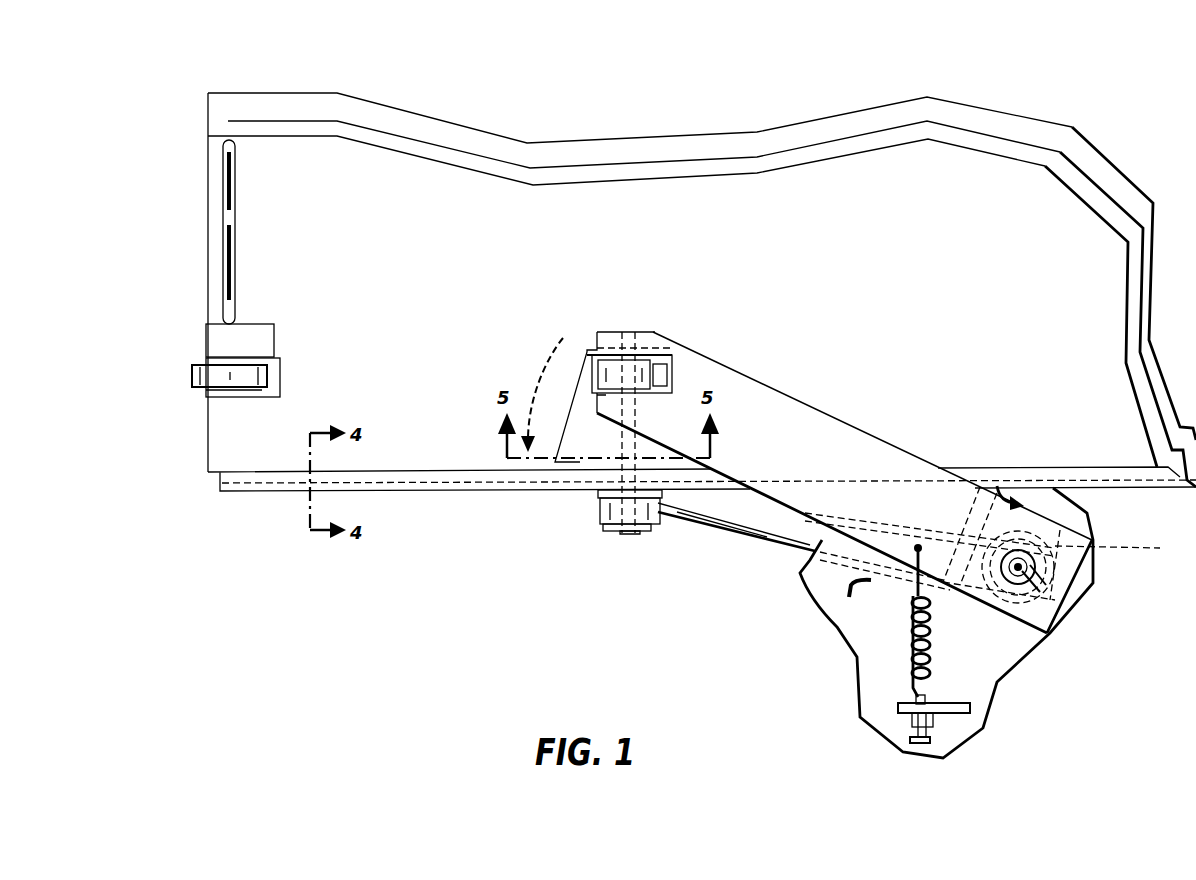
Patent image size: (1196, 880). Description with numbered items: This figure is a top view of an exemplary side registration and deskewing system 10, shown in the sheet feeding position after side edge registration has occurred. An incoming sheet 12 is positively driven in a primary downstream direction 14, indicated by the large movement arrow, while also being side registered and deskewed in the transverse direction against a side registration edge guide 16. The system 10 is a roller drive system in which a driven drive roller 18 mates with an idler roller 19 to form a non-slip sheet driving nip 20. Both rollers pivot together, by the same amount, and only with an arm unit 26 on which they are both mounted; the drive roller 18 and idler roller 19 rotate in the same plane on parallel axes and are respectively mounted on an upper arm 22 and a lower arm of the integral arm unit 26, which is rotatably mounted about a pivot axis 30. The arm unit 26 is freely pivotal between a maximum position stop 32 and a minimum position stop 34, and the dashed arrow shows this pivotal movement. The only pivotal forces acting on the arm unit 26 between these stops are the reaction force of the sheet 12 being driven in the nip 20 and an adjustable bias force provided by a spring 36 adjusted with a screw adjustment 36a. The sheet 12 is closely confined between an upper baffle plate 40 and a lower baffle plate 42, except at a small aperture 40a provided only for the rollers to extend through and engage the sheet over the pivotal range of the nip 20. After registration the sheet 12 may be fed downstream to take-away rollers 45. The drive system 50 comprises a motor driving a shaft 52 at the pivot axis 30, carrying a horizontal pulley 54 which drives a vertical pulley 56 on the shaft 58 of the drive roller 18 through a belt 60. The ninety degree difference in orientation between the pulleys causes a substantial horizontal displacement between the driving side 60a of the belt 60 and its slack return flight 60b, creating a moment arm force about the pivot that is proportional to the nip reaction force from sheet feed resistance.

The side registration and deskewing system 10 is at (548, 615).
The sheet 12 is at (618, 167).
The primary downstream direction 14 is at (195, 202).
The side registration edge guide 16 is at (445, 478).
The drive roller 18 is at (543, 380).
The idler roller 19 is at (667, 357).
The sheet driving nip 20 is at (640, 470).
The upper arm 22 is at (798, 418).
The arm unit 26 is at (852, 445).
The pivot axis 30 is at (1030, 578).
The maximum position stop 32 is at (1003, 492).
The minimum position stop 34 is at (850, 590).
The spring 36 is at (910, 635).
The screw adjustment 36a is at (913, 737).
The upper baffle plate 40 is at (812, 168).
The aperture 40a is at (605, 350).
The lower baffle plate 42 is at (963, 107).
The take-away rollers 45 is at (205, 372).
The drive system 50 is at (777, 572).
The shaft 52 is at (1067, 617).
The horizontal pulley 54 is at (1121, 549).
The vertical pulley 56 is at (600, 508).
The shaft of the drive roller 58 is at (622, 535).
The belt 60 is at (708, 530).
The driving side of belt 60a is at (763, 513).
The return flight of belt 60b is at (724, 533).